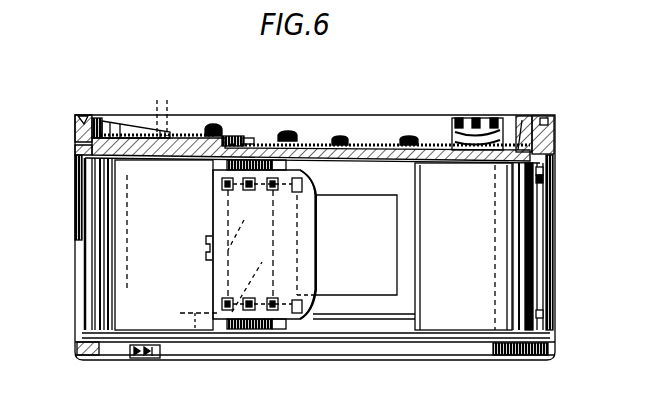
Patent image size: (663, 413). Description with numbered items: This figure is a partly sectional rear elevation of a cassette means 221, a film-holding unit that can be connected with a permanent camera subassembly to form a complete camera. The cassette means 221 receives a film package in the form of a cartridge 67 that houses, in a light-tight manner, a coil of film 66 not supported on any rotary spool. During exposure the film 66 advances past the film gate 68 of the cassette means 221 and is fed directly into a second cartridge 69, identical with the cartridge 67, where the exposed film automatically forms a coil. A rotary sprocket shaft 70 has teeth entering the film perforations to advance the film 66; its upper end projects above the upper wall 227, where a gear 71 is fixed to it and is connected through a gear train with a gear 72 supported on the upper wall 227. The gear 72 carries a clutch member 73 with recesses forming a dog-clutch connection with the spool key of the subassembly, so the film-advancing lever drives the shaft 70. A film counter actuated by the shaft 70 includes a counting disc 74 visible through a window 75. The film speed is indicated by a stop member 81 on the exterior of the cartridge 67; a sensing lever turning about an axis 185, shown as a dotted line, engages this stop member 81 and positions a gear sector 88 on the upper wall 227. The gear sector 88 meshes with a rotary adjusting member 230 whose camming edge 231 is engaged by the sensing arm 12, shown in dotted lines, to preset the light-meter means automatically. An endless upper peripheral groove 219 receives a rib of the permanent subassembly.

The sensing arm 12 is at (167, 104).
The film strip 66 is at (312, 262).
The cartridge 67 is at (92, 216).
The film gate 68 is at (358, 290).
The cartridge 69 is at (528, 258).
The rotary sprocket shaft 70 is at (257, 327).
The gear 71 is at (264, 145).
The gear 72 is at (476, 163).
The clutch member 73 is at (465, 118).
The counting disc 74 is at (140, 358).
The window 75 is at (161, 359).
The stop member 81 is at (207, 240).
The gear sector 88 is at (227, 137).
The turning axis 185 is at (194, 333).
The endless upper peripheral groove 219 is at (541, 124).
The cassette means 221 is at (508, 355).
The upper wall 227 is at (520, 150).
The rotary adjusting member 230 is at (76, 143).
The camming edge 231 is at (127, 127).